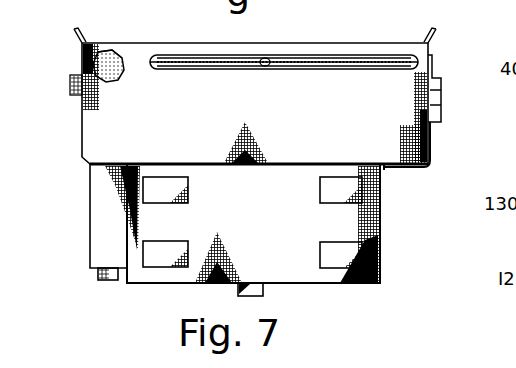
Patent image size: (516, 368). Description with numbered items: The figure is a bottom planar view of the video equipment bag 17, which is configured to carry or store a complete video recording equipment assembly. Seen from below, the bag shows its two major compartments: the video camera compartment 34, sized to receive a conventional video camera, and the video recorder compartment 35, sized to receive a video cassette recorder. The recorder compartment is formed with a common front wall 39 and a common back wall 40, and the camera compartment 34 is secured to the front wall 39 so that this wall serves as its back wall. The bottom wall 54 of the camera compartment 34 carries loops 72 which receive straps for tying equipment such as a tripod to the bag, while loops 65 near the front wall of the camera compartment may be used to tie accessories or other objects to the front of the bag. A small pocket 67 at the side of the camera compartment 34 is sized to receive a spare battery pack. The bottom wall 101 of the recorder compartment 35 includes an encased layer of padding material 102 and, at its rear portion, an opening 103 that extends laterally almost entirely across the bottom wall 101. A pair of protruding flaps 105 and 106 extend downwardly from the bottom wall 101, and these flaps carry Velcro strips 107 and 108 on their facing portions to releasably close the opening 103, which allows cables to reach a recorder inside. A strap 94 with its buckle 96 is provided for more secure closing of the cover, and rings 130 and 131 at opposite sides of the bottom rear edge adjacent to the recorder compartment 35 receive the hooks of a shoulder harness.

The video equipment bag 17 is at (396, 232).
The video camera compartment 34 is at (133, 224).
The video recorder compartment 35 is at (95, 113).
The common front wall 39 is at (385, 168).
The common back wall 40 is at (280, 44).
The bottom wall 54 is at (335, 283).
The loops 65 is at (240, 290).
The small pocket 67 is at (105, 197).
The loops 72 is at (160, 194).
The strap 94 is at (436, 138).
The buckle 96 is at (441, 100).
The bottom wall 101 is at (122, 52).
The encased layer of padding material 102 is at (108, 50).
The opening 103 is at (222, 57).
The protruding flap 105 is at (322, 55).
The protruding flap 106 is at (335, 68).
The Velcro strip 107 is at (266, 64).
The Velcro strip 108 is at (235, 64).
The ring 130 is at (74, 29).
The ring 131 is at (436, 29).